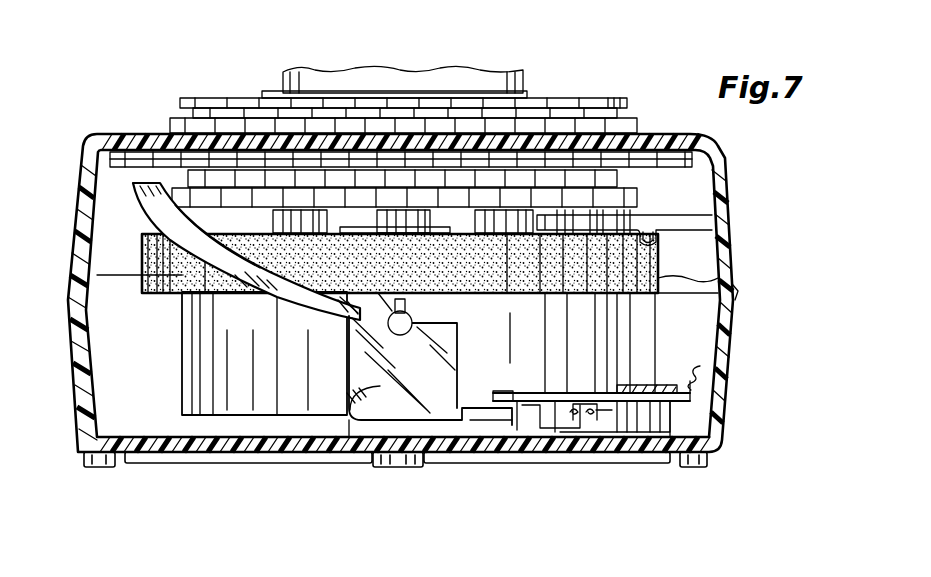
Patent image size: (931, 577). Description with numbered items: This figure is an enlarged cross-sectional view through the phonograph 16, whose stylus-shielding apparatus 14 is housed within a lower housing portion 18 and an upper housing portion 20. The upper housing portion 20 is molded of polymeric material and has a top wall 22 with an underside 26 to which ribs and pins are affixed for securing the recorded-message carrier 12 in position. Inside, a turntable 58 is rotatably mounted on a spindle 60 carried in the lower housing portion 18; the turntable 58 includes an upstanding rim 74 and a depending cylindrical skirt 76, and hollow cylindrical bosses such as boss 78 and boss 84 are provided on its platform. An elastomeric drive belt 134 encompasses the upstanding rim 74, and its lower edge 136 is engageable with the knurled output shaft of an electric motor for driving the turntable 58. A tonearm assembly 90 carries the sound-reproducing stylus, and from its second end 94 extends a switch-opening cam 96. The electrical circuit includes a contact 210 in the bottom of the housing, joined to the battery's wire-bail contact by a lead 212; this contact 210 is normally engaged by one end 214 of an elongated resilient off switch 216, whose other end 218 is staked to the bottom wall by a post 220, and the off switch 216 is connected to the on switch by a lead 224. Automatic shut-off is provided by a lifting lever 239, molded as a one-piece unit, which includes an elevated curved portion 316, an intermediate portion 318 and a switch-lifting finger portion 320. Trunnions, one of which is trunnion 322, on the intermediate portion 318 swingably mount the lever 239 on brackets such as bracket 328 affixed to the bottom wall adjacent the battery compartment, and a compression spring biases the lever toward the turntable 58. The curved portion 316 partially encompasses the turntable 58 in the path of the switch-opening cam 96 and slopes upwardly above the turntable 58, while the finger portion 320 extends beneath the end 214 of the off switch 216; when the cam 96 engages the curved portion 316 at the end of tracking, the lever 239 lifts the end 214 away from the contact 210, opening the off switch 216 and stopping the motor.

The recorded-message carrier 12 is at (411, 128).
The stylus-shielding apparatus 14 is at (705, 150).
The phonograph 16 is at (742, 327).
The lower housing portion 18 is at (734, 345).
The upper housing portion 20 is at (652, 187).
The top wall 22 is at (655, 136).
The underside 26 is at (122, 165).
The turntable 58 is at (140, 215).
The spindle 60 is at (397, 222).
The upstanding rim 74 is at (725, 240).
The cylindrical skirt 76 is at (182, 373).
The hollow cylindrical boss 78 is at (273, 227).
The hollow cylindrical boss 84 is at (490, 225).
The tonearm assembly 90 is at (537, 385).
The second end 94 is at (650, 213).
The switch-opening cam 96 is at (660, 243).
The elastomeric drive belt 134 is at (658, 256).
The lower edge 136 is at (162, 293).
The contact 210 is at (527, 413).
The lead 212 is at (588, 397).
The end 214 is at (497, 394).
The "off" switch 216 is at (560, 407).
The end 218 is at (655, 412).
The post 220 is at (665, 424).
The lead 224 is at (700, 372).
The lifting lever 239 is at (340, 361).
The curved portion 316 is at (208, 284).
The intermediate portion 318 is at (337, 410).
The switch-lifting finger portion 320 is at (487, 415).
The trunnion 322 is at (402, 323).
The bracket 328 is at (366, 423).